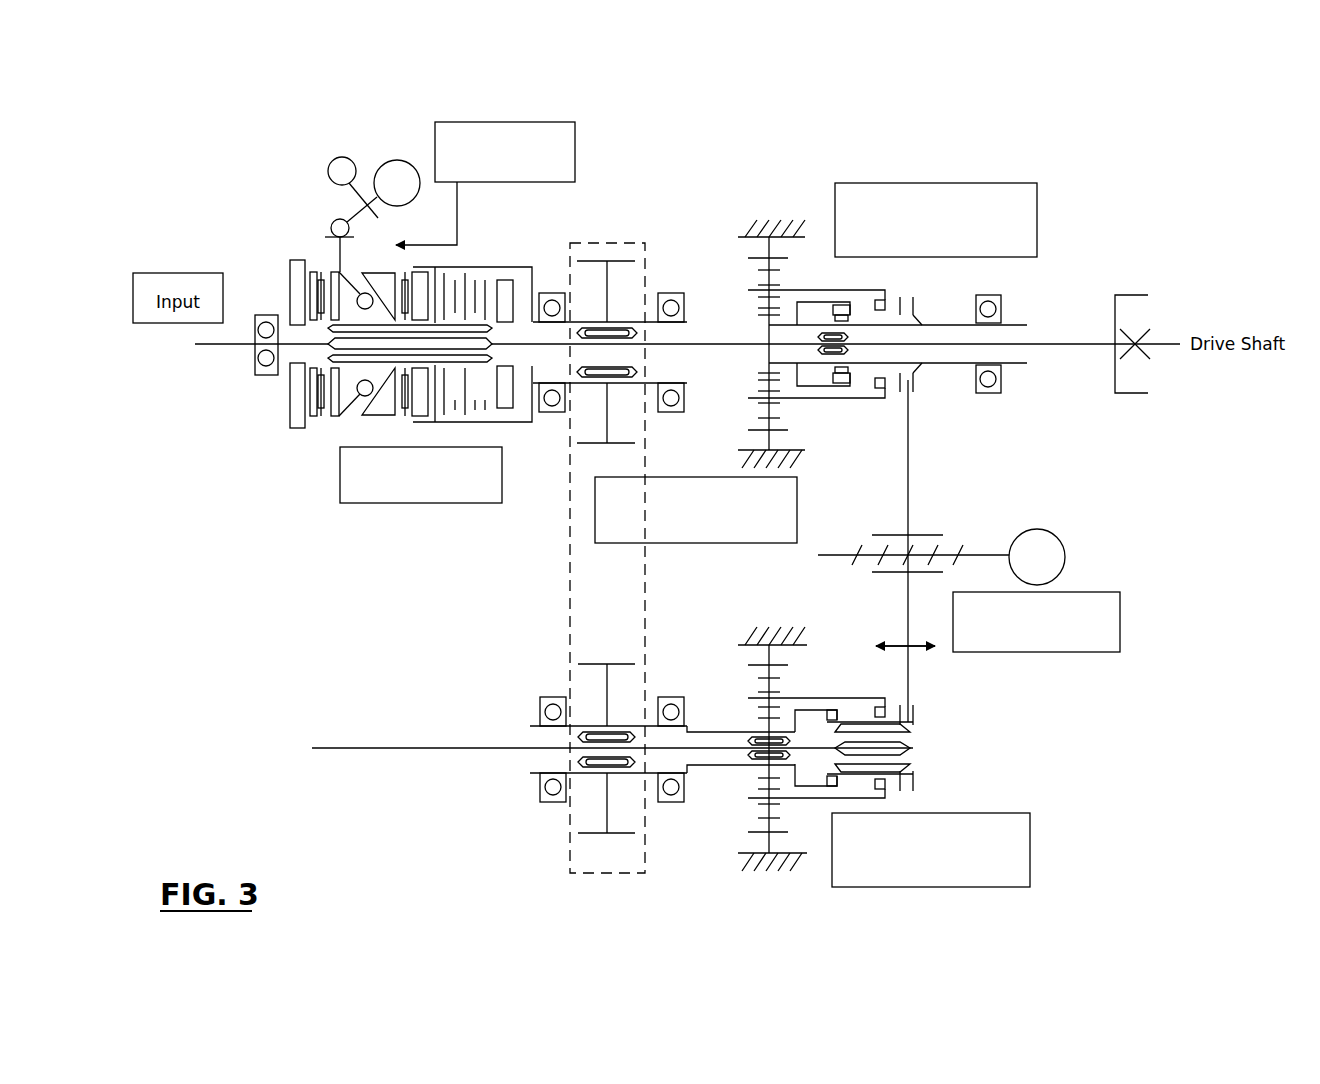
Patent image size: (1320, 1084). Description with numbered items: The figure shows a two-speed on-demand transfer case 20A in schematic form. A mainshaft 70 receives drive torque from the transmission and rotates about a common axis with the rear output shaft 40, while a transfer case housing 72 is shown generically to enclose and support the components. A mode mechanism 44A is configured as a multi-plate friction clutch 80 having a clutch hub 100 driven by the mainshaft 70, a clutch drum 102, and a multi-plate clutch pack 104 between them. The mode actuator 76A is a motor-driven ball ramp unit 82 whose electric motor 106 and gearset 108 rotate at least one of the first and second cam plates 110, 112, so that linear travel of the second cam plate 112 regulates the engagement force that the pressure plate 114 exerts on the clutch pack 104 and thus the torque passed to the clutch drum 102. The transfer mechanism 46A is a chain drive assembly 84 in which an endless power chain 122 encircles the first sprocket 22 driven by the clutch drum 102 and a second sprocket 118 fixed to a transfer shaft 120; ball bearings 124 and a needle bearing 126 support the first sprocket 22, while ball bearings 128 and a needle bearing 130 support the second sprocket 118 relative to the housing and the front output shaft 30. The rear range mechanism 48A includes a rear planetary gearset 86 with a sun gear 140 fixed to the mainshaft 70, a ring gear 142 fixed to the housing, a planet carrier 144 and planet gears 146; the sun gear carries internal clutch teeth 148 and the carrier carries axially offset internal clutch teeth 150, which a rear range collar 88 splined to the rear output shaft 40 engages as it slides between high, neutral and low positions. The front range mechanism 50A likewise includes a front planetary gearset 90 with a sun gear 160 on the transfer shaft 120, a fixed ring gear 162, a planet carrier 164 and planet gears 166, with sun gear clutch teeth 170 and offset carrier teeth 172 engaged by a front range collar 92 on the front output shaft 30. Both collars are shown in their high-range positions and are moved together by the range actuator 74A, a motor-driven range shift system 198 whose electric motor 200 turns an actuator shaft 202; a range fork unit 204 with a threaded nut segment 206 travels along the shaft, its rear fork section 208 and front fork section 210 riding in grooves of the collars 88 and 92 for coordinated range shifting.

The transfer case 20A is at (1088, 175).
The transfer mechanism sprocket 22 is at (603, 260).
The front output shaft 30 is at (400, 747).
The rear output shaft 40 is at (1017, 324).
The mode mechanism 44A is at (486, 428).
The transfer mechanism 46A is at (657, 440).
The rear range mechanism 48A is at (794, 276).
The front range mechanism 50A is at (854, 754).
The mainshaft 70 is at (226, 348).
The transfer case housing 72 is at (757, 258).
The range actuator 74A is at (1036, 622).
The mode actuator 76A is at (485, 183).
The multi-plate friction clutch 80 is at (463, 272).
The motor-driven ball ramp unit 82 is at (291, 257).
The chain drive assembly 84 is at (658, 275).
The rear planetary gearset 86 is at (793, 406).
The rear range collar 88 is at (875, 321).
The front planetary gearset 90 is at (837, 657).
The front range collar 92 is at (910, 729).
The clutch hub 100 is at (490, 362).
The clutch drum 102 is at (492, 266).
The multi-plate clutch pack 104 is at (481, 397).
The electric motor 106 is at (397, 160).
The gearset 108 is at (331, 225).
The first cam plate 110 is at (356, 396).
The second cam plate 112 is at (375, 270).
The pressure plate 114 is at (421, 277).
The second sprocket 118 is at (572, 858).
The transfer shaft 120 is at (706, 728).
The endless power chain 122 is at (570, 640).
The ball bearings 124 is at (552, 292).
The needle bearing 126 is at (622, 340).
The ball bearings 128 is at (540, 712).
The needle bearing 130 is at (596, 740).
The sun gear 140 is at (768, 329).
The ring gear 142 is at (760, 432).
The planet carrier 144 is at (815, 290).
The planet gears 146 is at (762, 386).
The internal clutch teeth 148 is at (842, 393).
The internal clutch teeth 150 is at (878, 388).
The sun gear 160 is at (760, 770).
The ring gear 162 is at (758, 850).
The planet carrier 164 is at (849, 704).
The planet gears 166 is at (760, 687).
The sun gear clutch teeth 170 is at (845, 716).
The internal clutch teeth 172 is at (893, 710).
The motor-driven range shift system 198 is at (1001, 551).
The electric motor 200 is at (1060, 534).
The actuator shaft 202 is at (985, 550).
The range fork unit 204 is at (922, 531).
The nut segment 206 is at (888, 574).
The rear fork section 208 is at (909, 425).
The front fork section 210 is at (909, 618).